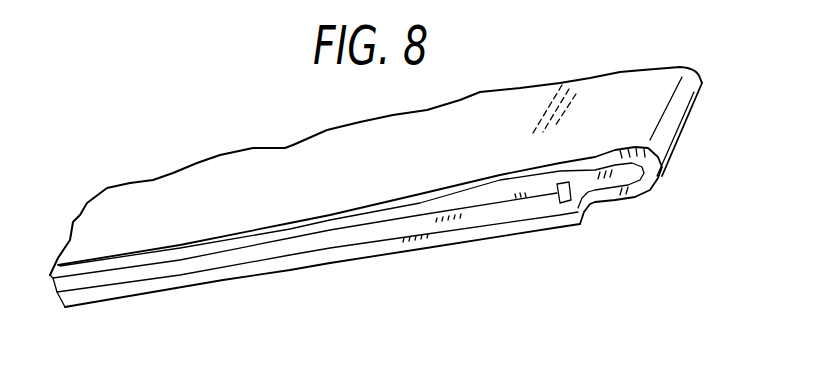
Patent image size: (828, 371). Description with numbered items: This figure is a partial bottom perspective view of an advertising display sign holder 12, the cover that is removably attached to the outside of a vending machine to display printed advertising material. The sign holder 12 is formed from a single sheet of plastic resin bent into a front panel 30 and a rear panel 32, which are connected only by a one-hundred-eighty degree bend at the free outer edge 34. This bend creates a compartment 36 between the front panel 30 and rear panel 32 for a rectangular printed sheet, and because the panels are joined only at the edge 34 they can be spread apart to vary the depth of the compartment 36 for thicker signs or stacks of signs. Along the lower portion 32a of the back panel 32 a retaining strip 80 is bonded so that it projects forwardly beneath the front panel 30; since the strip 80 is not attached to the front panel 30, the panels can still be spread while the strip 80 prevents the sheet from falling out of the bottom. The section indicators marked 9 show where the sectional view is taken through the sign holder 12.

The sign holder 12 is at (567, 76).
The front panel 30 is at (628, 100).
The free outer edge 34 is at (678, 118).
The rear panel 32 is at (607, 207).
The lower portion of the back panel 32a is at (510, 230).
The compartment 36 is at (580, 186).
The retaining strip 80 is at (467, 220).
The section line 9- 9 is at (93, 213).